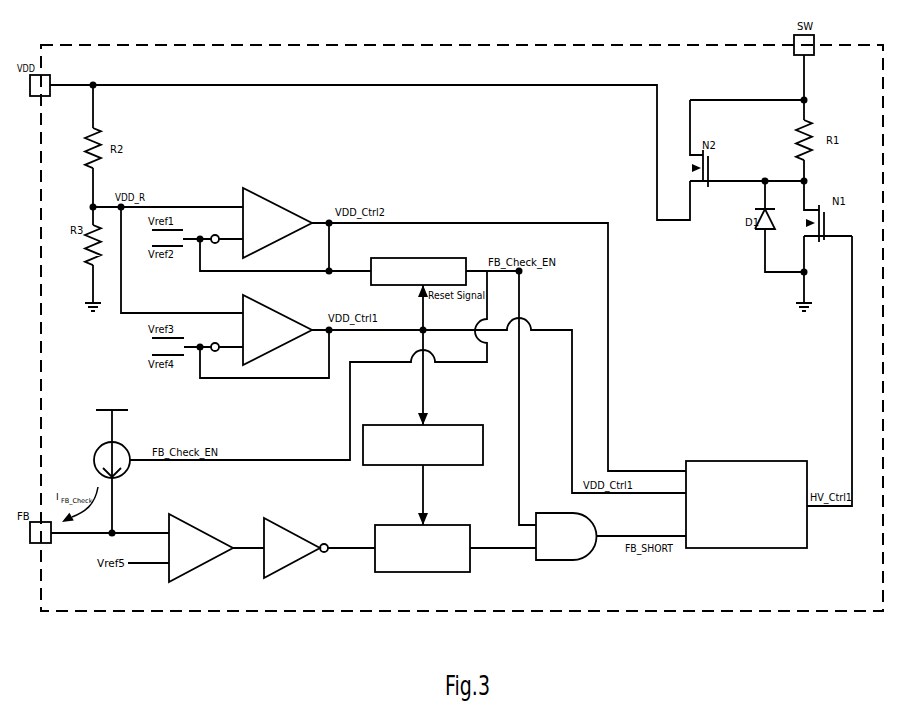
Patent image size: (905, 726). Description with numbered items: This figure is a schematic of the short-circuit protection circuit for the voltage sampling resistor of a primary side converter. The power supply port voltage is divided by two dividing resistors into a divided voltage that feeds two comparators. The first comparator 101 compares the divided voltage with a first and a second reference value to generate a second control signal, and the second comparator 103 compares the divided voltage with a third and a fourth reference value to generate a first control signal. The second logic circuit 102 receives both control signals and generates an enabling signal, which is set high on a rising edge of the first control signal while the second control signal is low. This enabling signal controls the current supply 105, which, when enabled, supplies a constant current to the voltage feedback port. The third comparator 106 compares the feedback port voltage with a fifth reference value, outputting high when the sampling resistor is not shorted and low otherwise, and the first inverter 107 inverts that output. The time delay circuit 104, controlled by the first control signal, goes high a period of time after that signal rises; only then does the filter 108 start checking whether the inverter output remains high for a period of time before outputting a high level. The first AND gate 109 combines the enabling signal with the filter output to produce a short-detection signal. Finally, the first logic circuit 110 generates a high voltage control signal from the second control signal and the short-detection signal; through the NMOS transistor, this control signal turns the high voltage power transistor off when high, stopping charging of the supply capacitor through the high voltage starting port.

The first comparator 101 is at (266, 205).
The second logic circuit 102 is at (400, 258).
The second comparator 103 is at (266, 312).
The time delay circuit 104 is at (450, 425).
The current supply 105 is at (124, 474).
The third comparator 106 is at (203, 530).
The first inverter 107 is at (290, 530).
The filter 108 is at (455, 525).
The first AND gate 109 is at (563, 560).
The first logic circuit 110 is at (738, 461).